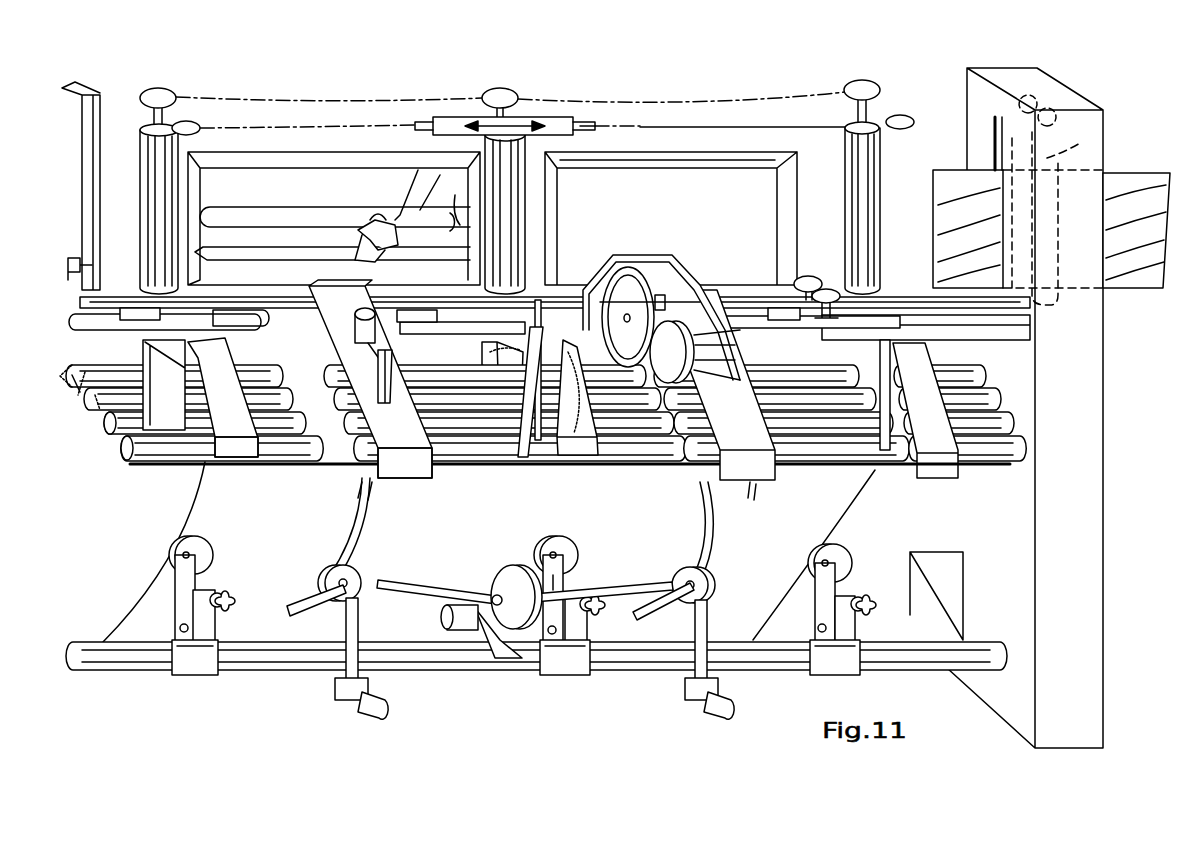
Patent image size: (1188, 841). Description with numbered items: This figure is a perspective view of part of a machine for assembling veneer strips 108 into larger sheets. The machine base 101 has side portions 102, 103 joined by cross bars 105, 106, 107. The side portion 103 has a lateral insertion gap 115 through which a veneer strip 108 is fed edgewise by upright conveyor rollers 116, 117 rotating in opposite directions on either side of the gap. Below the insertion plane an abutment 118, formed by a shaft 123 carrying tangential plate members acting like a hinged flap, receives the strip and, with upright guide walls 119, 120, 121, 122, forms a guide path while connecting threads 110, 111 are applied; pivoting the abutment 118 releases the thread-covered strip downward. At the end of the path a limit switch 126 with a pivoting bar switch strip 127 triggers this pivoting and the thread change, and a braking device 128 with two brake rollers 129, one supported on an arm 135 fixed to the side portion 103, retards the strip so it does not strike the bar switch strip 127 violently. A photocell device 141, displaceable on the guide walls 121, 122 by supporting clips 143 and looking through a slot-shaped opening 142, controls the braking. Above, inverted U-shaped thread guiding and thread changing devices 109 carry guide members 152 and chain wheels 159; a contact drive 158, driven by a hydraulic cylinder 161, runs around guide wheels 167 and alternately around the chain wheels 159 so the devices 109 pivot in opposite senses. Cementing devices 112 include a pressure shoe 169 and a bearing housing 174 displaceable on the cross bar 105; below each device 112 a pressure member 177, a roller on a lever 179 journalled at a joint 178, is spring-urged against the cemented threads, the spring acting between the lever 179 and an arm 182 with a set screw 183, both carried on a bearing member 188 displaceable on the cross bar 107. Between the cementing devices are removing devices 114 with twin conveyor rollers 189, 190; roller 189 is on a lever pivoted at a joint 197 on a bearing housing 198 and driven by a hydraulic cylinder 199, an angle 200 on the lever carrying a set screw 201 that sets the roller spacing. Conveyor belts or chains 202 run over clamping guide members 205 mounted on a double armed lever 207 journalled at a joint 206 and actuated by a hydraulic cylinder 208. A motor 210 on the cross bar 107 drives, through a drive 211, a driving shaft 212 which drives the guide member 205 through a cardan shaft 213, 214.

The machine base 101 is at (950, 690).
The side portion 102 is at (72, 385).
The side portion 103 is at (1095, 508).
The cross bar 105 is at (122, 448).
The cross bar 106 is at (106, 422).
The cross bar 107 is at (456, 656).
The veneer strip 108 is at (1128, 190).
The thread guiding and thread changing device 109 is at (133, 199).
The connecting thread 110 is at (200, 506).
The connecting thread 111 is at (560, 545).
The cementing device 112 is at (245, 420).
The removing device 114 is at (414, 441).
The lateral insertion gap 115 is at (995, 142).
The conveyor roller 116 is at (1062, 160).
The conveyor roller 117 is at (1015, 132).
The abutment 118 is at (130, 310).
The guide wall 119 is at (722, 172).
The guide wall 120 is at (688, 150).
The guide wall 121 is at (405, 160).
The guide wall 122 is at (300, 170).
The shaft 123 is at (100, 296).
The limit switch 126 is at (72, 262).
The bar switch strip 127 is at (88, 176).
The braking device 128 is at (808, 274).
The brake roller 129 is at (800, 282).
The arm 135 is at (985, 335).
The photocell device 141 is at (385, 218).
The opening 142 is at (230, 212).
The supporting clip 143 is at (471, 277).
The guide member 152 is at (555, 120).
The contact drive 158 is at (618, 106).
The chain wheel 159 is at (160, 95).
The hydraulic cylinder 161 is at (590, 126).
The guide wheel 167 is at (192, 124).
The pressure shoe 169 is at (522, 455).
The bearing housing 174 is at (245, 450).
The pressure member 177 is at (182, 545).
The joint 178 is at (180, 630).
The lever 179 is at (563, 570).
The arm 182 is at (218, 632).
The set screw 183 is at (226, 598).
The bearing member 188 is at (205, 664).
The conveyor roller 189 is at (735, 352).
The conveyor roller 190 is at (660, 268).
The joint 197 is at (682, 300).
The bearing housing 198 is at (415, 470).
The hydraulic cylinder 199 is at (362, 343).
The angle 200 is at (378, 388).
The set screw 201 is at (375, 360).
The conveyor belt or chain 202 is at (345, 520).
The guide member 205 is at (333, 570).
The joint 206 is at (346, 634).
The double armed lever 207 is at (336, 682).
The hydraulic cylinder 208 is at (365, 708).
The motor 210 is at (445, 620).
The drive 211 is at (470, 604).
The driving shaft 212 is at (512, 566).
The cardan shaft 213 is at (380, 582).
The cardan shaft 214 is at (642, 586).